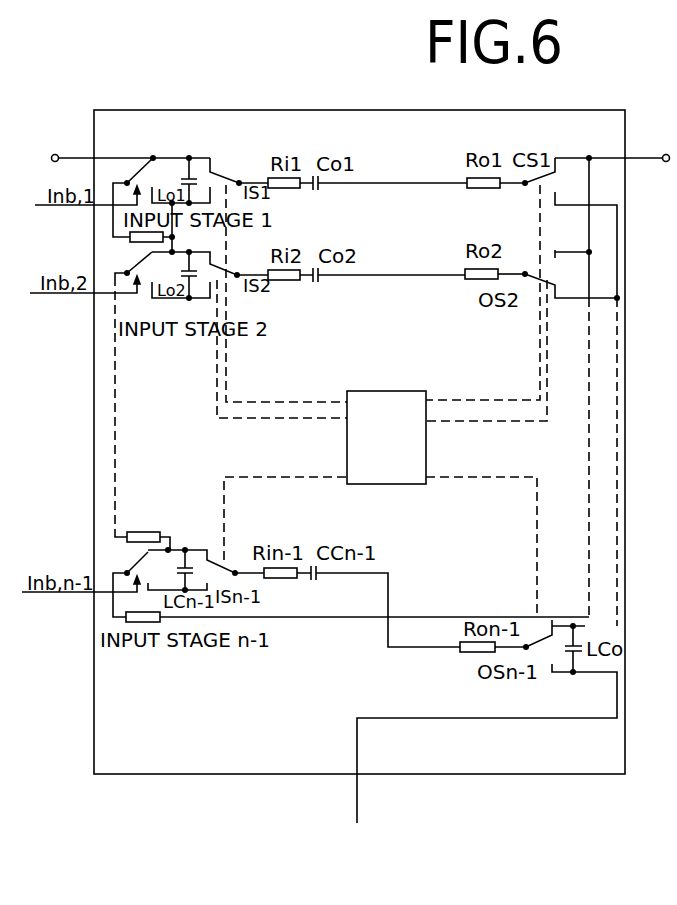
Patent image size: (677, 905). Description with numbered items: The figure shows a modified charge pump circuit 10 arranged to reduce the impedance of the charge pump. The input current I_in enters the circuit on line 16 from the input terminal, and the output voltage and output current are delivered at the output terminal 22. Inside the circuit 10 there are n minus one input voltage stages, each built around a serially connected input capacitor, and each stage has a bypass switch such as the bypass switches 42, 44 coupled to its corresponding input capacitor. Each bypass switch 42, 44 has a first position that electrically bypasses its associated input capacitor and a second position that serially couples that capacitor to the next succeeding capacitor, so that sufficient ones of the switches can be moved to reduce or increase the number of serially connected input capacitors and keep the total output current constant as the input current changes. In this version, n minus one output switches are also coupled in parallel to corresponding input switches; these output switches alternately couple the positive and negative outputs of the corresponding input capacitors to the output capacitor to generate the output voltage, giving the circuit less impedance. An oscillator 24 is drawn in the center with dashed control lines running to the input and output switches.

The multiplexing circuit 10 is at (322, 110).
The line 16 is at (56, 153).
The output terminal 22 is at (664, 154).
The oscillator 24 is at (378, 391).
The bypass switch 42 is at (133, 180).
The bypass switch 44 is at (147, 268).